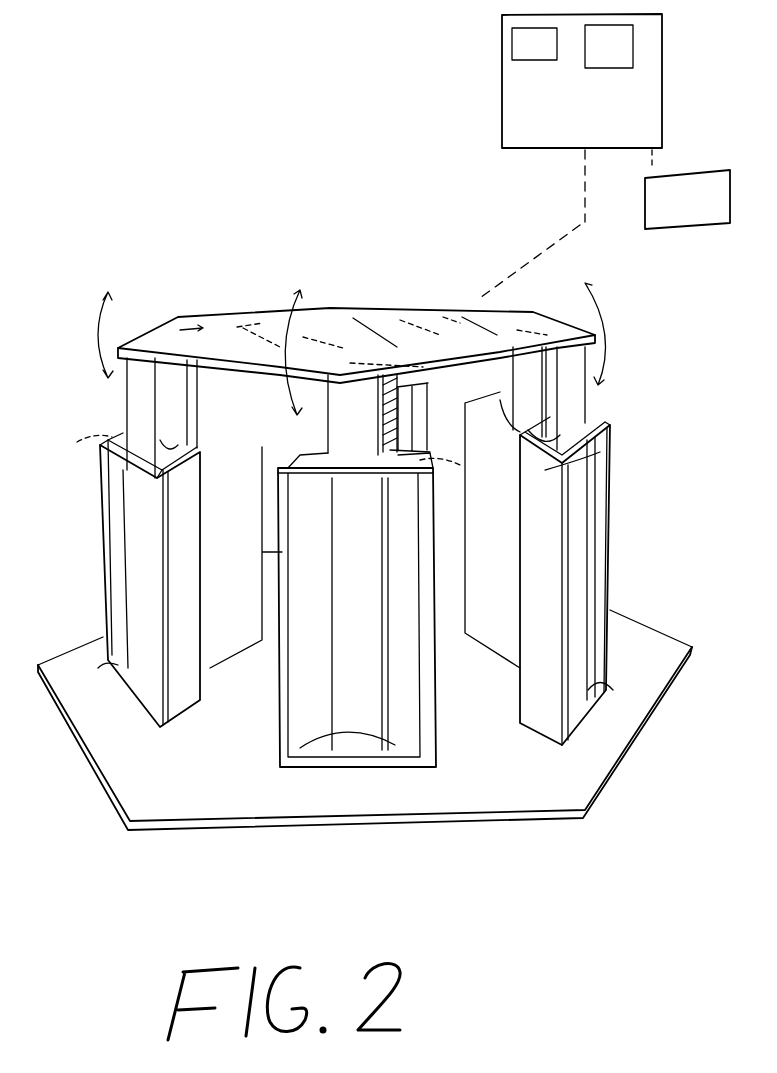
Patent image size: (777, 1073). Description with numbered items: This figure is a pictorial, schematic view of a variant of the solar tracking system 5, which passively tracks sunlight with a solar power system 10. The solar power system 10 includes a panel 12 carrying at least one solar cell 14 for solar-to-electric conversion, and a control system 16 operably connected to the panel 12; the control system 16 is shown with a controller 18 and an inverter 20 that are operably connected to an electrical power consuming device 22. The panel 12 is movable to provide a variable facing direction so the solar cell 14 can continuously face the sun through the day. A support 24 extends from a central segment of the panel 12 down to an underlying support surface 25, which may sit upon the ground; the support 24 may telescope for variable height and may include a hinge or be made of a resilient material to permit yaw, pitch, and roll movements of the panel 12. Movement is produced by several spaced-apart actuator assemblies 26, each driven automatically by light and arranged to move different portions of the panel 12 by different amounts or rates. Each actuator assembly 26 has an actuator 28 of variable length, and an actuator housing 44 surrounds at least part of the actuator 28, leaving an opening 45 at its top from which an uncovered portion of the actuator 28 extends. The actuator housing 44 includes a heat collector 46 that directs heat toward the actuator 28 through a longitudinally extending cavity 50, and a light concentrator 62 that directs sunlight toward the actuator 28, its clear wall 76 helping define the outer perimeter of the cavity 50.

The solar tracking system 5 is at (288, 130).
The solar power system 10 is at (221, 296).
The panel 12 is at (388, 297).
The solar cell 14 is at (403, 322).
The control system 16 is at (704, 74).
The controller 18 is at (548, 55).
The inverter 20 is at (622, 57).
The electrical power consuming device 22 is at (698, 212).
The support 24 is at (398, 440).
The support surface 25 is at (563, 773).
The actuator assembly 26 is at (346, 601).
The actuator 28 is at (118, 414).
The actuator housing 44 is at (96, 619).
The opening 45 is at (60, 450).
The heat collector 46 is at (92, 537).
The cavity 50 is at (110, 562).
The light concentrator 62 is at (100, 507).
The clear wall 76 is at (110, 660).